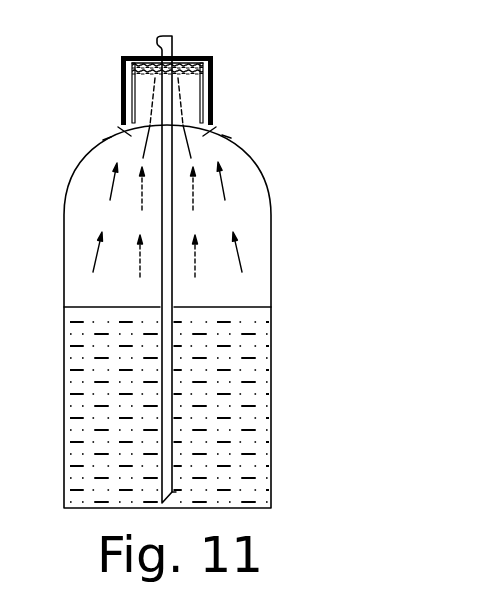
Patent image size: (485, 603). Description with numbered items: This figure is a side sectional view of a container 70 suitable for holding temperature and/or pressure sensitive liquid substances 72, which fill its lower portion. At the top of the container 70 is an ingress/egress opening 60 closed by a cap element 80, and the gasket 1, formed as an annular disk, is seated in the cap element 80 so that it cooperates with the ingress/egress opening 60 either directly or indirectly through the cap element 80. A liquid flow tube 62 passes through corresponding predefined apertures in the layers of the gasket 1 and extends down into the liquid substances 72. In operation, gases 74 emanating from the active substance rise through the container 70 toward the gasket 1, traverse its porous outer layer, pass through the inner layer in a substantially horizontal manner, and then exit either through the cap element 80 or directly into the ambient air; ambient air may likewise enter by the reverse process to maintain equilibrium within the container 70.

The gasket 1 is at (199, 74).
The ingress/egress opening 60 is at (143, 90).
The liquid flow tube 62 is at (173, 50).
The container 70 is at (272, 252).
The liquid substances 72 is at (218, 408).
The gases 74 is at (233, 227).
The cap element 80 is at (214, 90).